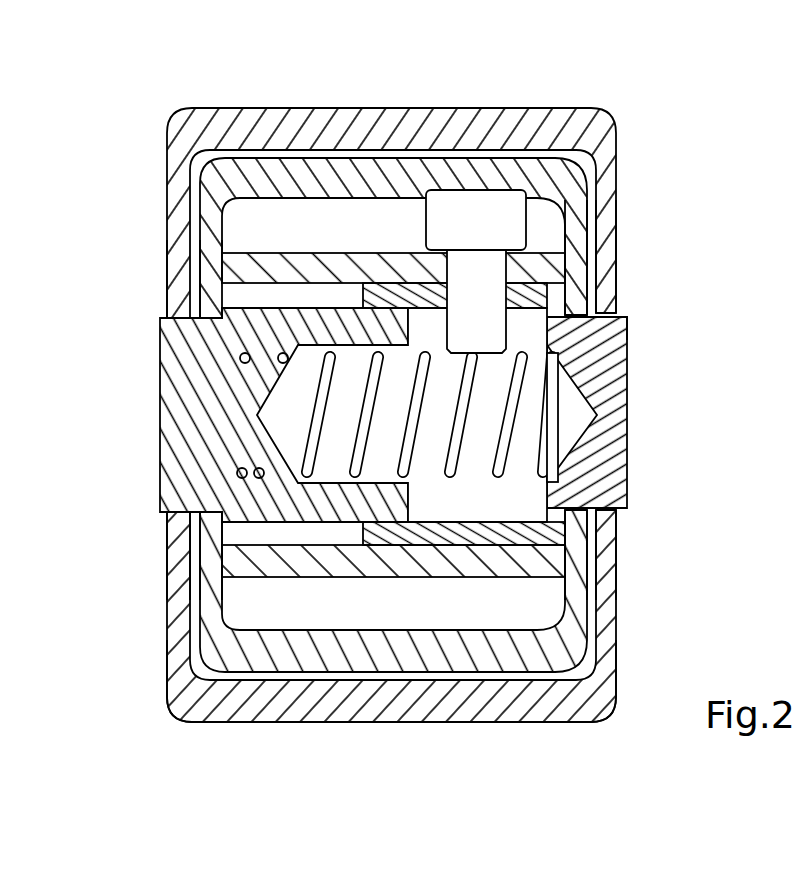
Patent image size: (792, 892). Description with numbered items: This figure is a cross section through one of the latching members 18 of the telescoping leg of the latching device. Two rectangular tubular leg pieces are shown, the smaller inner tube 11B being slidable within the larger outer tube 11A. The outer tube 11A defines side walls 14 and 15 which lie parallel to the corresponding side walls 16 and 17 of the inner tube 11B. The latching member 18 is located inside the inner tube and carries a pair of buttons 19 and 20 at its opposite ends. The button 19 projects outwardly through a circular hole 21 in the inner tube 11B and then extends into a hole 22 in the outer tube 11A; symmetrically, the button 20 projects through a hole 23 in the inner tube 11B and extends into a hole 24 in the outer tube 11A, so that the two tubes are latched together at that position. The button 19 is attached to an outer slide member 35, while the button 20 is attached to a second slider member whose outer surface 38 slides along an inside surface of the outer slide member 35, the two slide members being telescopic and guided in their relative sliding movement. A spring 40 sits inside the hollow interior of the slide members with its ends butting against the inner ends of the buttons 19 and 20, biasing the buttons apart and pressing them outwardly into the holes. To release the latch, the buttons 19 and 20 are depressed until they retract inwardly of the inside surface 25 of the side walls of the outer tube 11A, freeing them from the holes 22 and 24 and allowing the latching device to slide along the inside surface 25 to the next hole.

The outer tube 11A is at (611, 119).
The inner tube 11B is at (616, 173).
The side wall 14 is at (618, 263).
The side wall 15 is at (167, 258).
The side wall 16 is at (570, 243).
The side wall 17 is at (202, 287).
The latching member 18 is at (395, 578).
The button 19 is at (628, 381).
The button 20 is at (133, 438).
The circular hole 21 is at (608, 562).
The hole 22 is at (620, 521).
The hole 23 is at (167, 569).
The hole 24 is at (167, 540).
The inside surface 25 is at (167, 657).
The outer slide member 35 is at (408, 283).
The outer surface 38 is at (217, 347).
The spring 40 is at (626, 322).